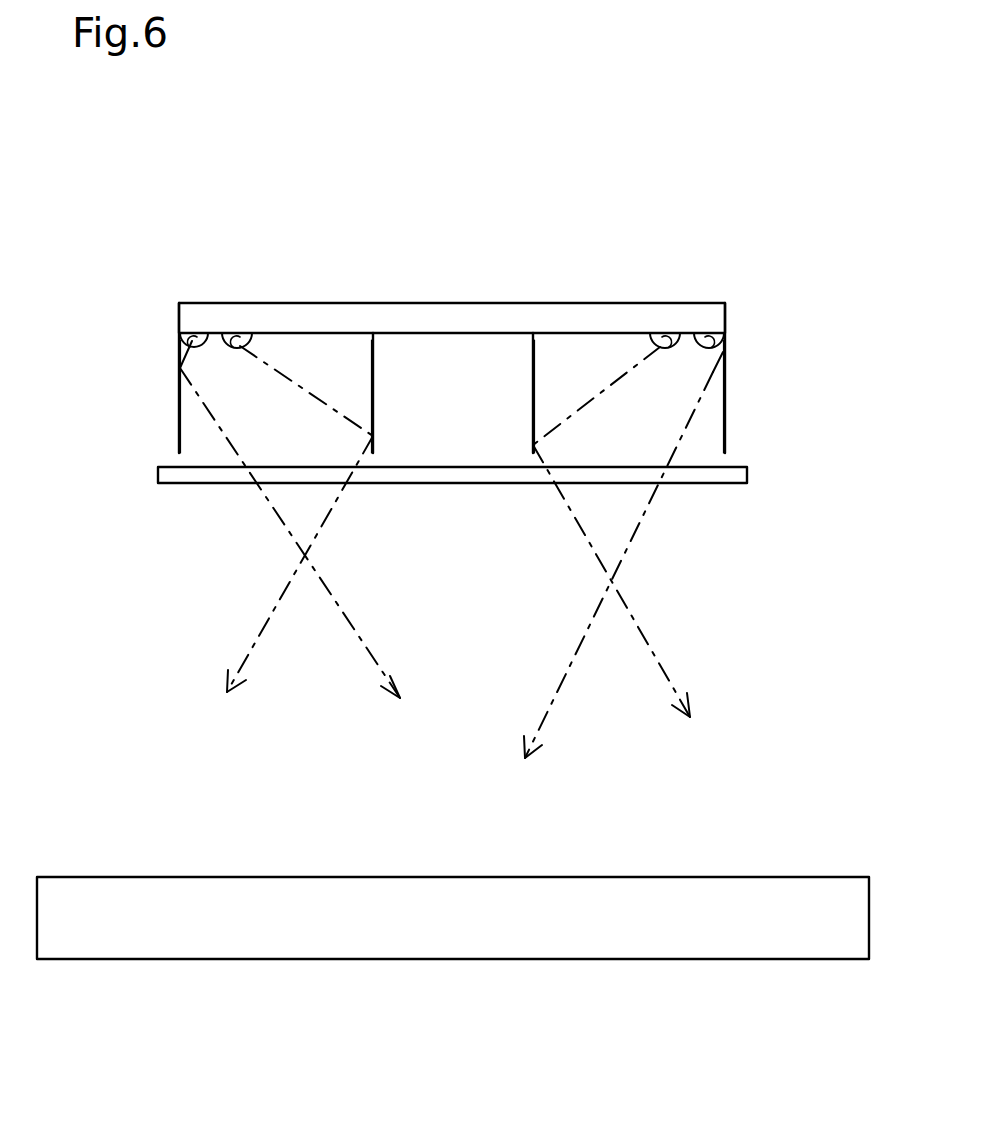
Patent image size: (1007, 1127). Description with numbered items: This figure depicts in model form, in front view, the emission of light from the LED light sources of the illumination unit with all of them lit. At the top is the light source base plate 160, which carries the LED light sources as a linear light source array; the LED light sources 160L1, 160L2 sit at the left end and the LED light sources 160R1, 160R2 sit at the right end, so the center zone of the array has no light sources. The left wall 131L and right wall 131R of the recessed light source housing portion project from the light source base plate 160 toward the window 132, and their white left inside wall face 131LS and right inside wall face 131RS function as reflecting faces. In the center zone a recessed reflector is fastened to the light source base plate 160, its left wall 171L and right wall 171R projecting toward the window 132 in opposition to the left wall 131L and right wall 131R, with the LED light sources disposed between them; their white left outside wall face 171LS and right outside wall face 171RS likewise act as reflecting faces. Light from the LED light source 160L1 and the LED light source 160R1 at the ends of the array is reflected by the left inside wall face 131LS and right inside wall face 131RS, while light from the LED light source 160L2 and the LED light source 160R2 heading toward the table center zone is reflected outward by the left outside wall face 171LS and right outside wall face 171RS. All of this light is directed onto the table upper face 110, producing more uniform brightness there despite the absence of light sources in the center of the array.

The table upper face 110 is at (716, 877).
The left wall 131L is at (178, 425).
The right wall 131R is at (727, 392).
The left inside wall face 131LS is at (180, 439).
The right inside wall face 131RS is at (723, 435).
The window 132 is at (740, 484).
The light source base plate 160 is at (672, 310).
The LED light source 160L1 is at (178, 346).
The LED light source 160L2 is at (262, 342).
The LED light source 160R1 is at (708, 348).
The LED light source 160R2 is at (650, 343).
The left wall 171L is at (374, 393).
The right wall 171R is at (532, 407).
The left outside wall face 171LS is at (372, 360).
The right outside wall face 171RS is at (534, 362).